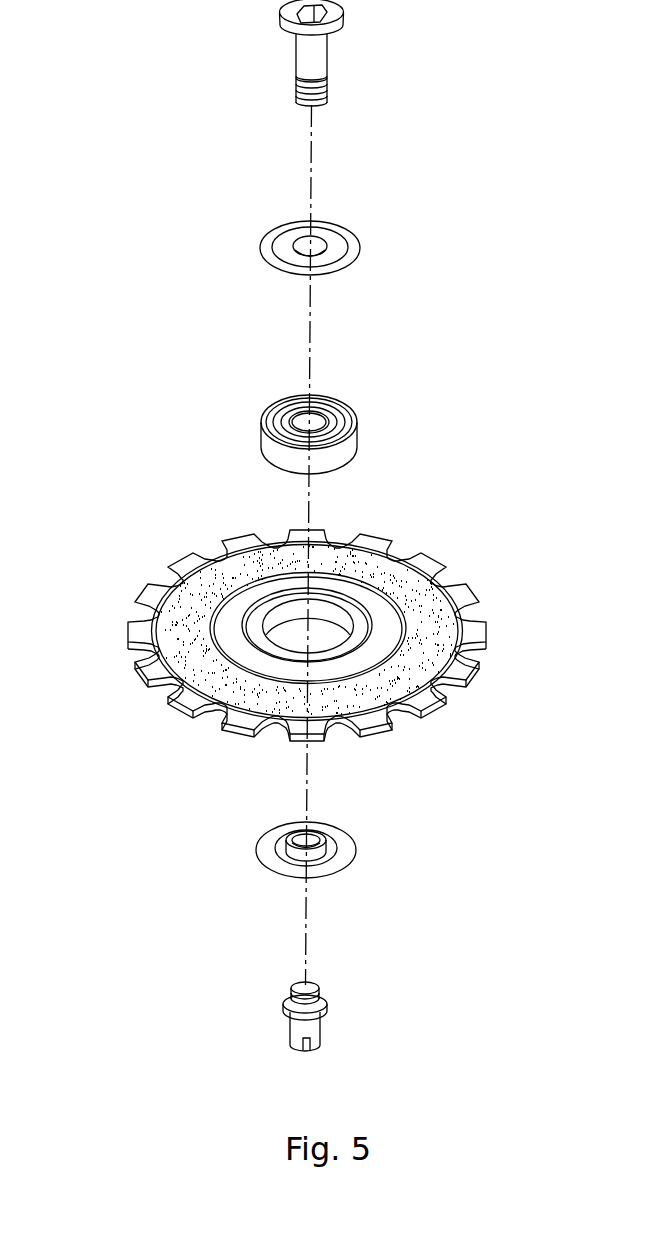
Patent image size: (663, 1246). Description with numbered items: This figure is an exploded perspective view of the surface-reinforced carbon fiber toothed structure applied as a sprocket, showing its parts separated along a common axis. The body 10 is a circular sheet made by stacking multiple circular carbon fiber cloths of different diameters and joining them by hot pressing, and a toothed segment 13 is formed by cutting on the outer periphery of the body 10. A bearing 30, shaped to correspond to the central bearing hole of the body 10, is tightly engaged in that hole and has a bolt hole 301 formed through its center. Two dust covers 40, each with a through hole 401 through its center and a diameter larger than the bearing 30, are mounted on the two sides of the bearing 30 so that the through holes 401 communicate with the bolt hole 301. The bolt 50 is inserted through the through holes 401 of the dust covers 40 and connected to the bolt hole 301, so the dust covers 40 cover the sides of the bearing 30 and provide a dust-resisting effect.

The bolt 50 is at (276, 45).
The dust cover 40 is at (262, 211).
The through hole 401 is at (301, 245).
The bearing 30 is at (263, 400).
The bolt hole 301 is at (300, 418).
The body 10 is at (267, 618).
The toothed segment 13 is at (228, 545).